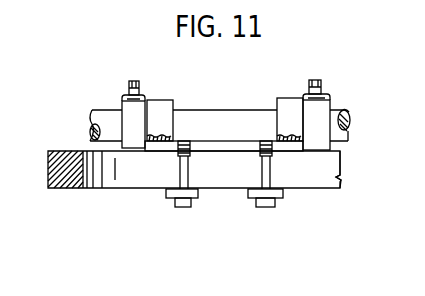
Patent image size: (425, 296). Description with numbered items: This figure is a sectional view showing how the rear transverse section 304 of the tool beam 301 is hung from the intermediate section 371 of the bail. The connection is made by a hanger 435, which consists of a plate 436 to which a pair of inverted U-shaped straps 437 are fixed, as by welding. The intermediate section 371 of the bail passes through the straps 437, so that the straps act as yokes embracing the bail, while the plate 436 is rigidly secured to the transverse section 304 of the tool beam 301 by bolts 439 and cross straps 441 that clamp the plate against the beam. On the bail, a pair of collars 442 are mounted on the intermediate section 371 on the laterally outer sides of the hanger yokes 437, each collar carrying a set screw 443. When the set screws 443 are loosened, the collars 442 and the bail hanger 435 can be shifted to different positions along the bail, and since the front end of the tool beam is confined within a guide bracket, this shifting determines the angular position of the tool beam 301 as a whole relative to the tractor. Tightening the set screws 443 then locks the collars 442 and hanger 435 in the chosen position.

The tool beam 301 is at (344, 176).
The rear transverse section of the tool beam 304 is at (127, 188).
The intermediate section of the bail 371 is at (190, 117).
The hanger 435 is at (280, 157).
The plate 436 is at (222, 145).
The inverted U-shaped straps 437 is at (162, 106).
The bolts 439 is at (258, 165).
The cross straps 441 is at (250, 193).
The collars 442 is at (128, 109).
The set screws 443 is at (131, 81).